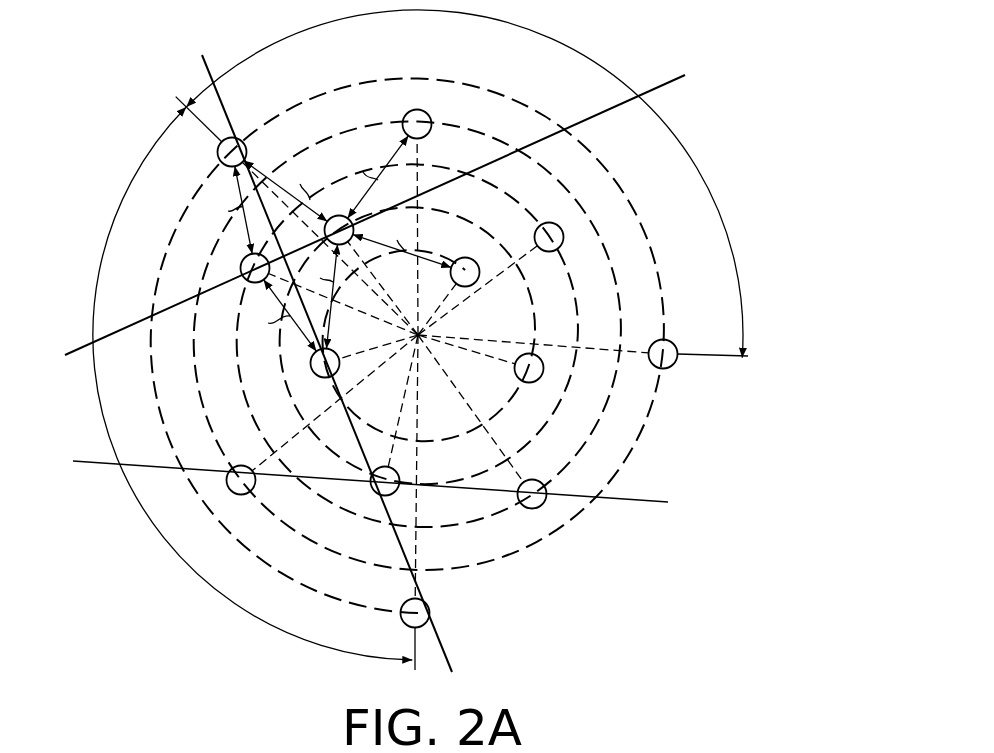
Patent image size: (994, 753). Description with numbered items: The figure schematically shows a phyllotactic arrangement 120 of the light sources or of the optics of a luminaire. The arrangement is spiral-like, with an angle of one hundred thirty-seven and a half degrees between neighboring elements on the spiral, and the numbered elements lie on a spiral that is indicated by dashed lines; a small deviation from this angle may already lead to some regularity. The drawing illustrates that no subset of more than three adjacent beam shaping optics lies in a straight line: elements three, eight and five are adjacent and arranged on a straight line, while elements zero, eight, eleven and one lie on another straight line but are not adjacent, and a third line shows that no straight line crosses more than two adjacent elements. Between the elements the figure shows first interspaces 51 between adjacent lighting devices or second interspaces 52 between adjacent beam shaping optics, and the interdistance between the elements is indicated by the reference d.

The phyllotactic arrangement 120 is at (428, 352).
The first interspaces 51 is at (488, 349).
The second interspaces 52 is at (483, 200).